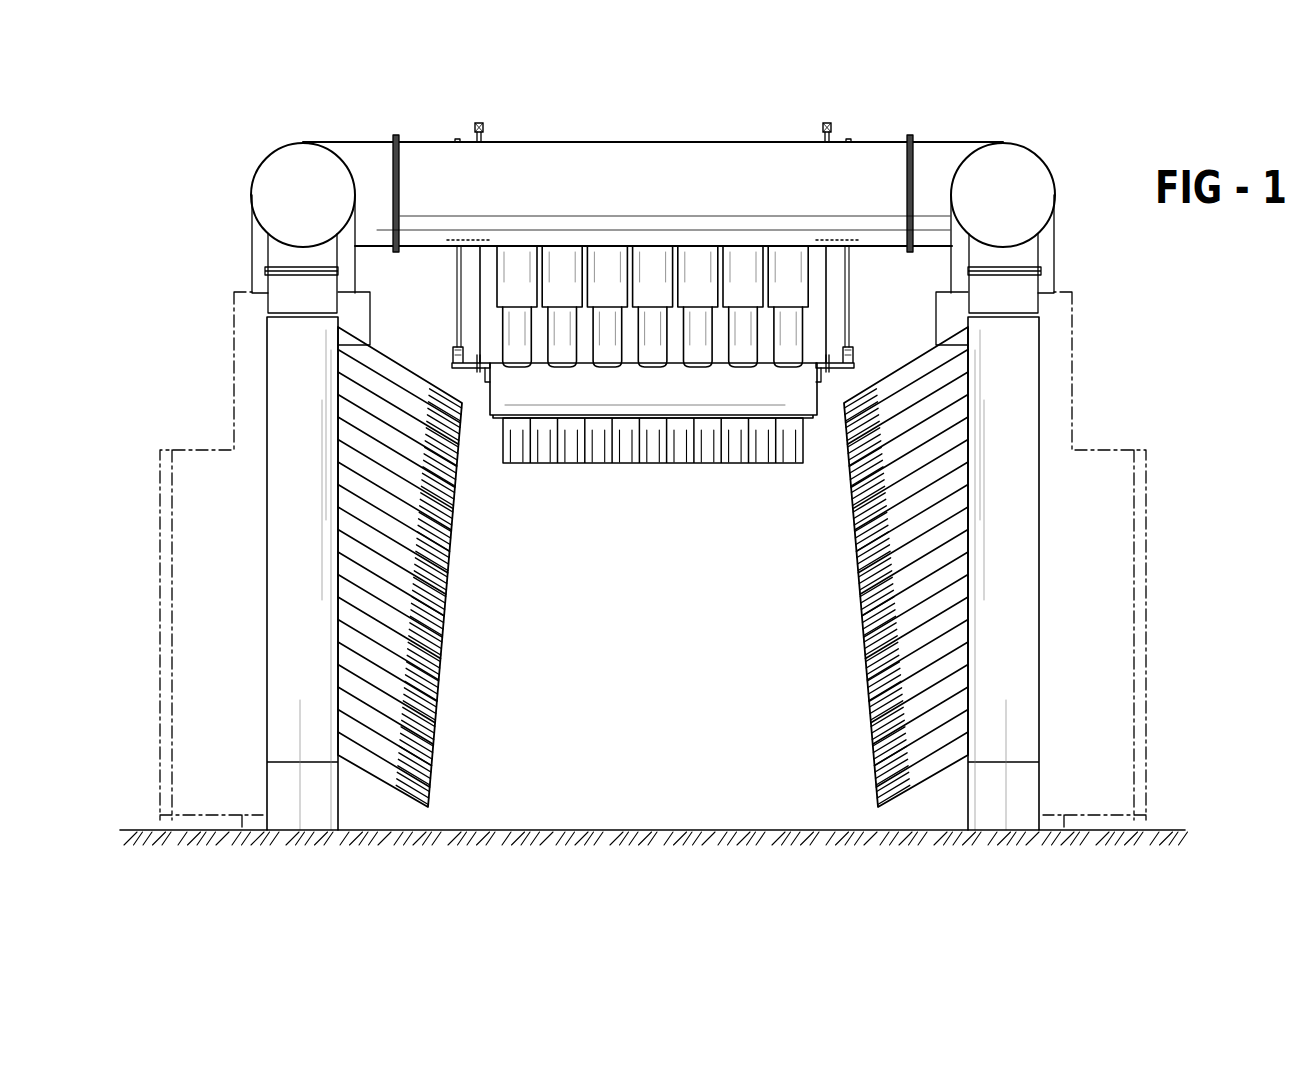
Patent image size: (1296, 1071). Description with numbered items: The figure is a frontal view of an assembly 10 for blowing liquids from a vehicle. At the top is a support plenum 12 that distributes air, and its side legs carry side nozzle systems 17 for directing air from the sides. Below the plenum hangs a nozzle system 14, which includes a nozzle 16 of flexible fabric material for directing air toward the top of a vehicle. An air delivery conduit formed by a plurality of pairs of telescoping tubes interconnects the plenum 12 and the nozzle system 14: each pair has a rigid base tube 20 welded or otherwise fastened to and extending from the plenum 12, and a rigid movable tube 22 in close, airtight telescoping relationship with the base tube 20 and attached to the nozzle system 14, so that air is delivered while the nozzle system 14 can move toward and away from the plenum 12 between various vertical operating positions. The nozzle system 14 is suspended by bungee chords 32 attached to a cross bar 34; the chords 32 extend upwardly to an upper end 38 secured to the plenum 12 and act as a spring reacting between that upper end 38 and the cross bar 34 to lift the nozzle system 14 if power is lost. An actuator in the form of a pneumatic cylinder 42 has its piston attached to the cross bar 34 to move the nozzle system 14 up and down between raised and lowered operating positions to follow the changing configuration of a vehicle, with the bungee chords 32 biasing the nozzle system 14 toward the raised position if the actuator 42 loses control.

The assembly for blowing liquids from a vehicle 10 is at (1070, 131).
The support plenum 12 is at (727, 142).
The nozzle system 14 is at (497, 226).
The nozzle 16 is at (650, 464).
The side nozzle systems 17 is at (450, 592).
The base tube 20 is at (558, 262).
The movable tube 22 is at (607, 357).
The bungee chords 32 is at (456, 323).
The cross bar 34 is at (852, 374).
The upper end 38 is at (458, 240).
The pneumatic cylinder 42 is at (480, 272).